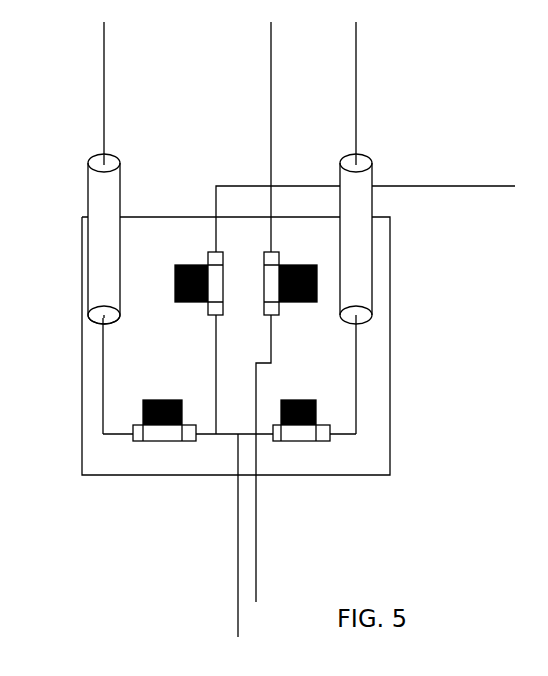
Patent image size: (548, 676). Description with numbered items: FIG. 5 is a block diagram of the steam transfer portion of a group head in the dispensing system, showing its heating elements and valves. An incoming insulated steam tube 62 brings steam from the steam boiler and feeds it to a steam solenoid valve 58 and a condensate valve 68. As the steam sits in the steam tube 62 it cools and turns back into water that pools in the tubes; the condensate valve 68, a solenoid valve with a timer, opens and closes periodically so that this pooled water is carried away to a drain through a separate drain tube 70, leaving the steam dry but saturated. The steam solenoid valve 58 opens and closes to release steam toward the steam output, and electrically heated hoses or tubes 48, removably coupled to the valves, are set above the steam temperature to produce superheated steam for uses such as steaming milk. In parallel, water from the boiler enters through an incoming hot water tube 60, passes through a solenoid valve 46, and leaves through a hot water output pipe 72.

The solenoid valve 46 is at (319, 283).
The electrically heated hose or tube 48 is at (101, 232).
The steam solenoid valve 58 is at (142, 412).
The incoming hot water tube 60 is at (258, 460).
The insulated steam tube 62 is at (102, 352).
The condensate valve 68 is at (174, 285).
The drain tube 70 is at (270, 71).
The hot water output pipe 72 is at (309, 183).